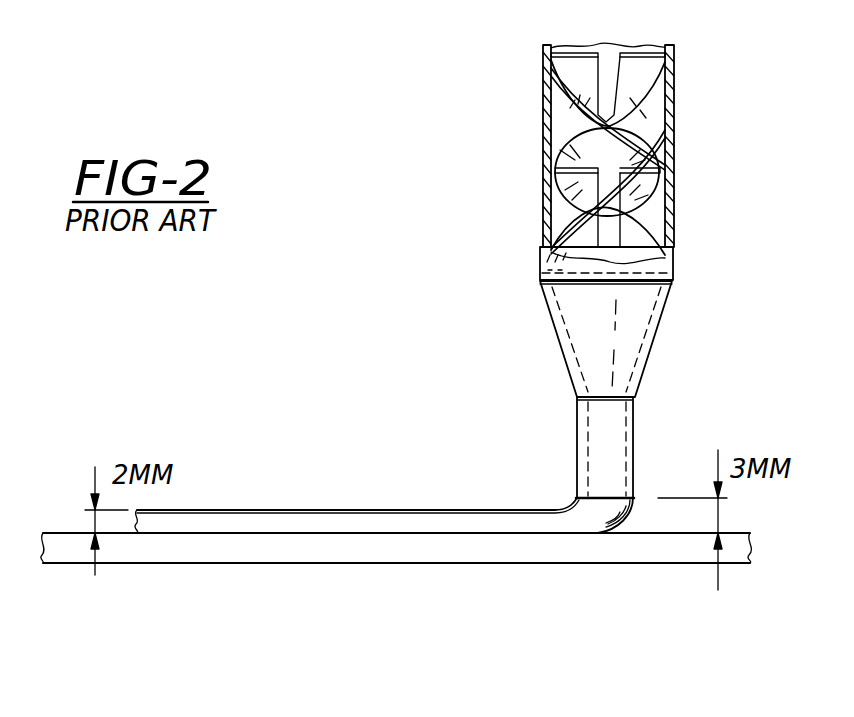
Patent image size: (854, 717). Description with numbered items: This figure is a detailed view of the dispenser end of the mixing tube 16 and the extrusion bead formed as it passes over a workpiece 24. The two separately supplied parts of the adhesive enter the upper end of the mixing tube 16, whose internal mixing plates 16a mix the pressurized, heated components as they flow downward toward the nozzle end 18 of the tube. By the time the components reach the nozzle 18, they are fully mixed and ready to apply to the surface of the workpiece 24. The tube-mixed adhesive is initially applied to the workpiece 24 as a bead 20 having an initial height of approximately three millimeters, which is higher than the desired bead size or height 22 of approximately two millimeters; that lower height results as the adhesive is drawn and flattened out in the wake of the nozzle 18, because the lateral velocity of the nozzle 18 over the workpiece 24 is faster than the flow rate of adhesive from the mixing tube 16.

The mixing tube 16 is at (675, 128).
The internal mixing plates 16a is at (565, 74).
The nozzle end 18 is at (580, 457).
The bead 20 is at (615, 520).
The desired bead size or height 22 is at (398, 522).
The workpiece 24 is at (258, 548).